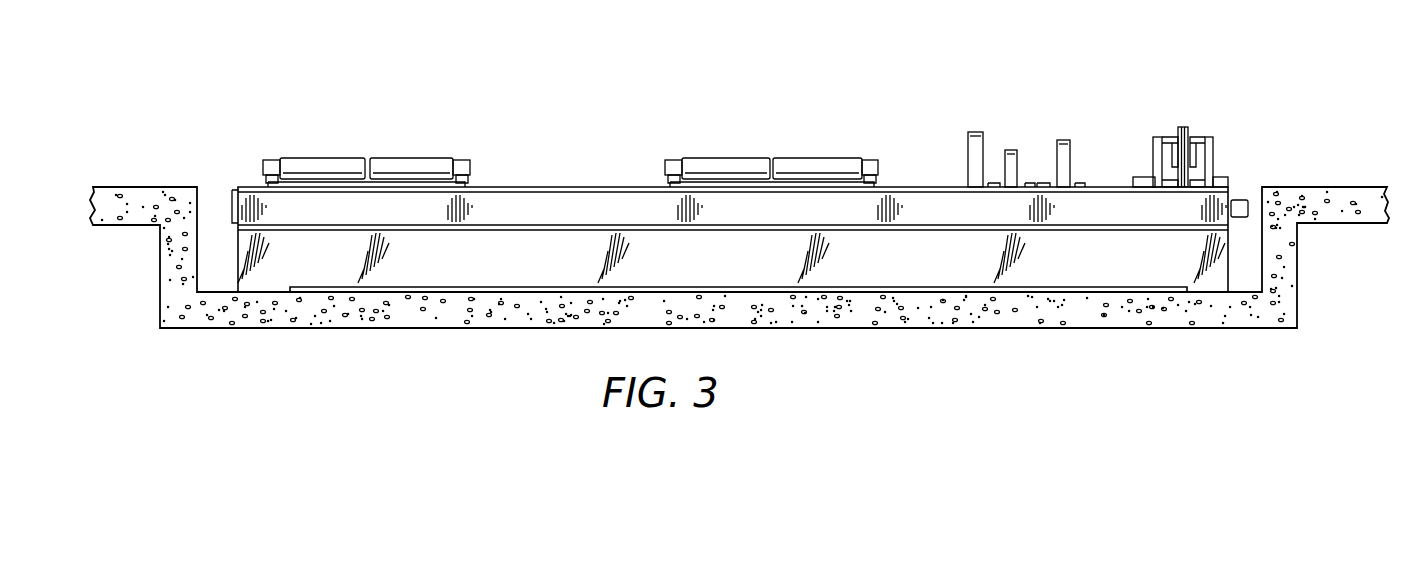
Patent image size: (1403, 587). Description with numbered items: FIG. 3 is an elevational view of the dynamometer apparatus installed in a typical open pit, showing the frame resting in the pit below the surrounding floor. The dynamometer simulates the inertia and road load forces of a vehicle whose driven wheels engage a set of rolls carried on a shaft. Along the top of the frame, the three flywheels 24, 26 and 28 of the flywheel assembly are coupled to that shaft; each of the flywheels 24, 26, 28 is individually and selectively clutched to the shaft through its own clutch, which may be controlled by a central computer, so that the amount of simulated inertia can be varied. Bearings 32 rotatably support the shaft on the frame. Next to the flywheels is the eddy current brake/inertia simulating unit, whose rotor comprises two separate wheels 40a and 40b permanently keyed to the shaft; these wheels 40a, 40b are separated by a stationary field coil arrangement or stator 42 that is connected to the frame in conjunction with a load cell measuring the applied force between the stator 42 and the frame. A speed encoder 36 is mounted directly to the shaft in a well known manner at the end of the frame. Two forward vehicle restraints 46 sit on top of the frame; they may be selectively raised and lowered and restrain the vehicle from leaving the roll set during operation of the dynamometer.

The flywheel 24 is at (976, 131).
The flywheel 26 is at (1010, 149).
The flywheel 28 is at (1063, 139).
The bearings 32 is at (1140, 177).
The speed encoder 36 is at (1244, 200).
The rotor wheel 40a is at (1157, 137).
The rotor wheel 40b is at (1210, 137).
The stator 42 is at (1183, 127).
The forward vehicle restraints 46 is at (268, 140).